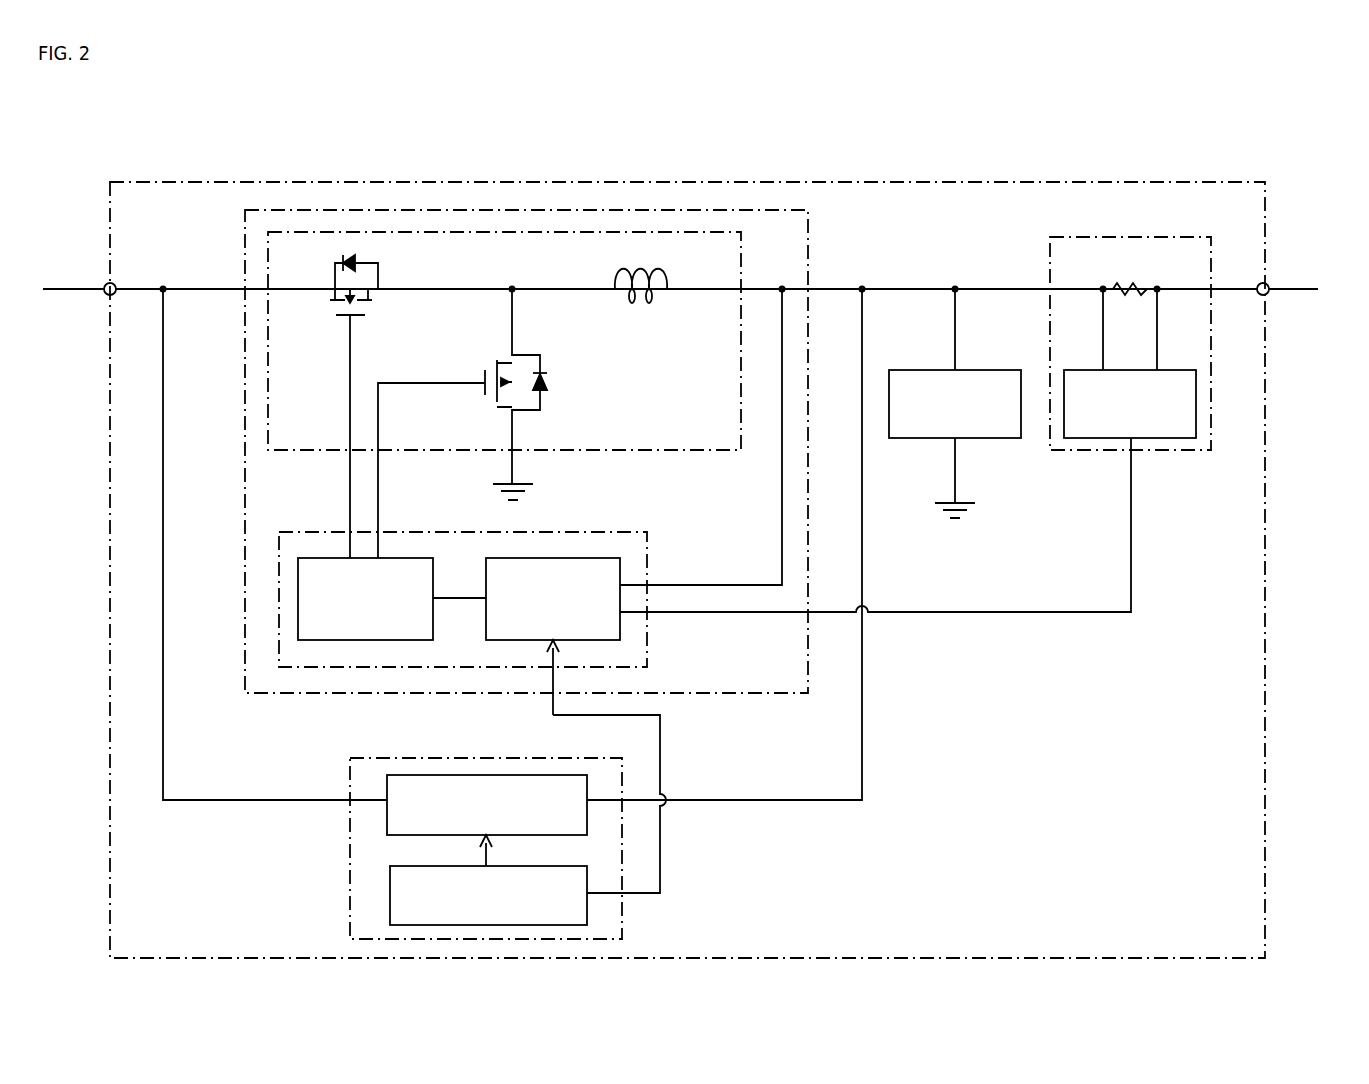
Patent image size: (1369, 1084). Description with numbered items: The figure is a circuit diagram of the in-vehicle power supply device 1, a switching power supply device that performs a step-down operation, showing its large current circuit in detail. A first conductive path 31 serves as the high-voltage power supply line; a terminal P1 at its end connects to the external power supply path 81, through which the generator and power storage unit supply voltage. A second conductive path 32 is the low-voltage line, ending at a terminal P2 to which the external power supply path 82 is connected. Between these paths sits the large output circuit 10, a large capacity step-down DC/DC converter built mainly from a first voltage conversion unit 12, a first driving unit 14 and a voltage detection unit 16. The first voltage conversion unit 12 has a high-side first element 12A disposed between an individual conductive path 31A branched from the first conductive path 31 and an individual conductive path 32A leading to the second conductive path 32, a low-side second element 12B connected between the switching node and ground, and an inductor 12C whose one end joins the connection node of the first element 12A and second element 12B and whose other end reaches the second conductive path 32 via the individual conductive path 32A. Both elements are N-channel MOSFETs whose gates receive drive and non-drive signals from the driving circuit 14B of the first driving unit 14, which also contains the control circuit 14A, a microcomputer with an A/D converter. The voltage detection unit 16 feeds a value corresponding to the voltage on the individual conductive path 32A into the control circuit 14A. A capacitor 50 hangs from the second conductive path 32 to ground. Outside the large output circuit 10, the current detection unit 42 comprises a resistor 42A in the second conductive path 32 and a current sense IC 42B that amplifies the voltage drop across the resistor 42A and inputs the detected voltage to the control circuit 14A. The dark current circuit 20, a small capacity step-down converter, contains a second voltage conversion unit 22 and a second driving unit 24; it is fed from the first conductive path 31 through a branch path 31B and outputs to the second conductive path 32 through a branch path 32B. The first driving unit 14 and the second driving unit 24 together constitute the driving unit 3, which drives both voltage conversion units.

The power supply device 1 is at (940, 181).
The driving unit 3 is at (252, 817).
The large output circuit 10 is at (683, 208).
The first voltage conversion unit 12 is at (742, 258).
The first element 12A is at (370, 298).
The second element 12B is at (507, 407).
The inductor 12C is at (632, 303).
The first driving unit 14 is at (345, 667).
The control circuit 14A is at (607, 558).
The driving circuit 14B is at (414, 558).
The voltage detection unit 16 is at (781, 470).
The dark current circuit 20 is at (450, 758).
The second voltage conversion unit 22 is at (537, 775).
The second driving unit 24 is at (390, 895).
The first conductive path 31 is at (140, 287).
The individual conductive path 31A is at (201, 287).
The first branch path 31B is at (165, 425).
The second conductive path 32 is at (1000, 287).
The individual conductive path 32A is at (830, 288).
The second branch path 32B is at (864, 746).
The current detection unit 42 is at (1117, 237).
The resistor 42A is at (1118, 283).
The current sense IC 42B is at (1180, 438).
The capacitor 50 is at (1003, 438).
The power supply path 81 is at (68, 287).
The power supply path 82 is at (1302, 288).
The terminal P1 is at (104, 295).
The terminal P2 is at (1268, 295).